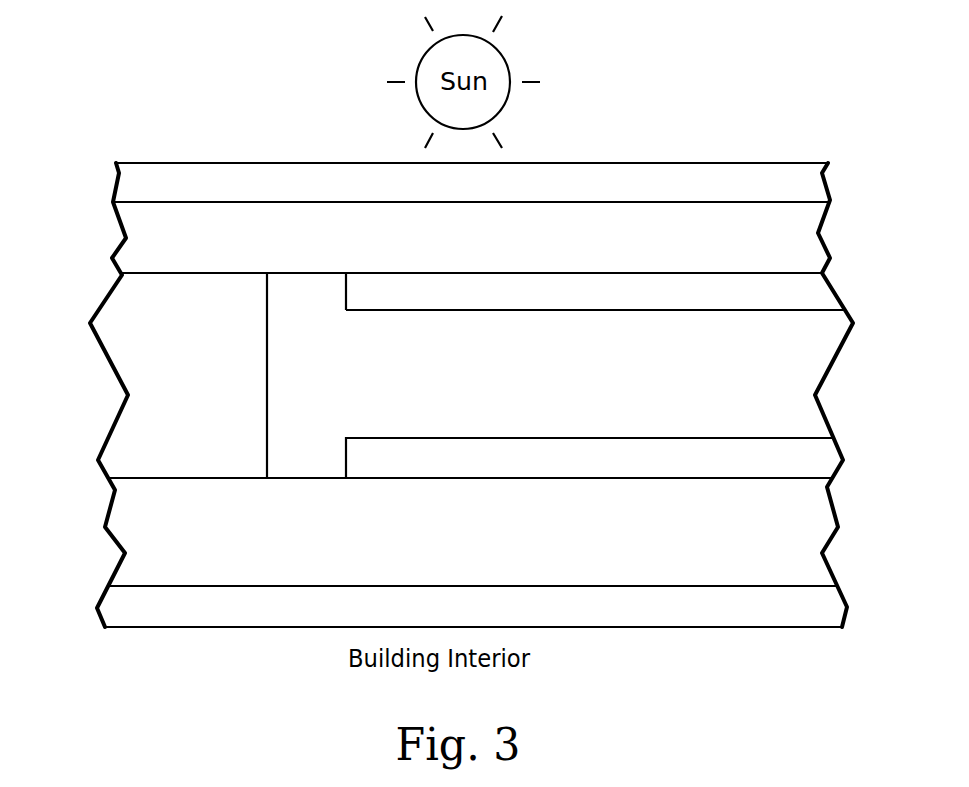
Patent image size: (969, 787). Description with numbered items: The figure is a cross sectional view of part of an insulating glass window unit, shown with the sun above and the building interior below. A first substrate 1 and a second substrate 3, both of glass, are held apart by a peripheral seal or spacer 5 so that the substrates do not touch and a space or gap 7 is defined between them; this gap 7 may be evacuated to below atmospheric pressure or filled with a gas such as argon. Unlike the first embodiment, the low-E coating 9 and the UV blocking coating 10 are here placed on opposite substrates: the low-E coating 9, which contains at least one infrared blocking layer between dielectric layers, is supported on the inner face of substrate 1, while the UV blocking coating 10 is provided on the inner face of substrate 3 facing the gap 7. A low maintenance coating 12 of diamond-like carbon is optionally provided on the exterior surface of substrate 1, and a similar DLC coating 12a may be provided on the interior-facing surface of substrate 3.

The low maintenance coating 12 is at (710, 177).
The first substrate 1 is at (807, 227).
The low-E coating 9 is at (807, 292).
The space or gap 7 is at (807, 372).
The UV blocking coating 10 is at (815, 456).
The peripheral seal or spacer 5 is at (138, 352).
The second substrate 3 is at (807, 548).
The DLC coating 12a is at (660, 615).